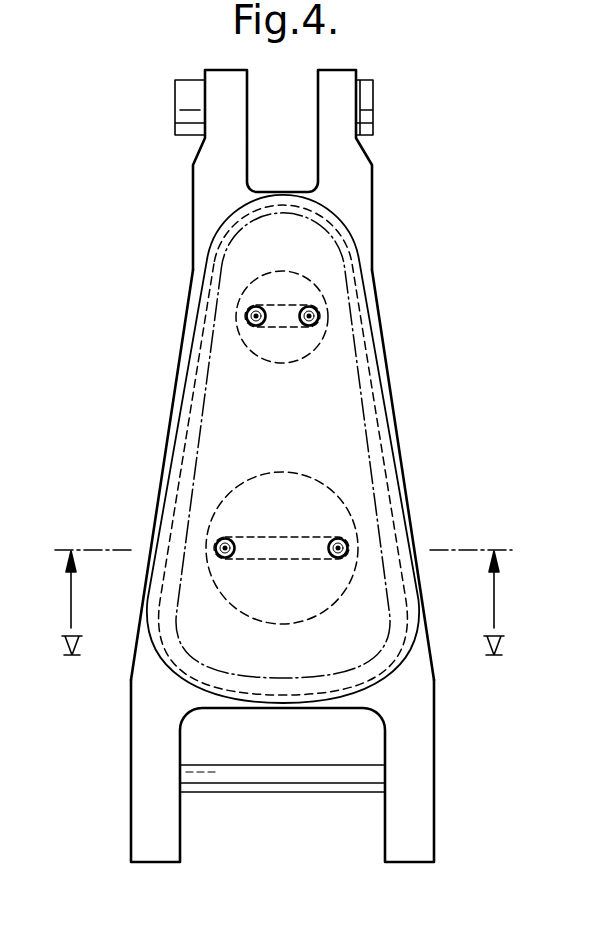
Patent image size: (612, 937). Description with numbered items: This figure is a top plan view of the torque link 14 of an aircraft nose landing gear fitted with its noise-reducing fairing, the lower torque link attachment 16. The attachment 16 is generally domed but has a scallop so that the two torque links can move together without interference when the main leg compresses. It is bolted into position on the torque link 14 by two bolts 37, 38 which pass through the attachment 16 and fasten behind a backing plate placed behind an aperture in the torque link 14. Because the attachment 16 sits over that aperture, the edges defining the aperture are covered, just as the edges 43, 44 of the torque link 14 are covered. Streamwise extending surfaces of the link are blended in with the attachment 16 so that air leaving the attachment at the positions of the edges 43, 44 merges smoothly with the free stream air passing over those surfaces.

The torque link 14 is at (436, 719).
The lower torque link attachment 16 is at (343, 417).
The bolt 37 is at (214, 547).
The bolt 38 is at (348, 548).
The edge 43 is at (186, 312).
The edge 44 is at (378, 312).